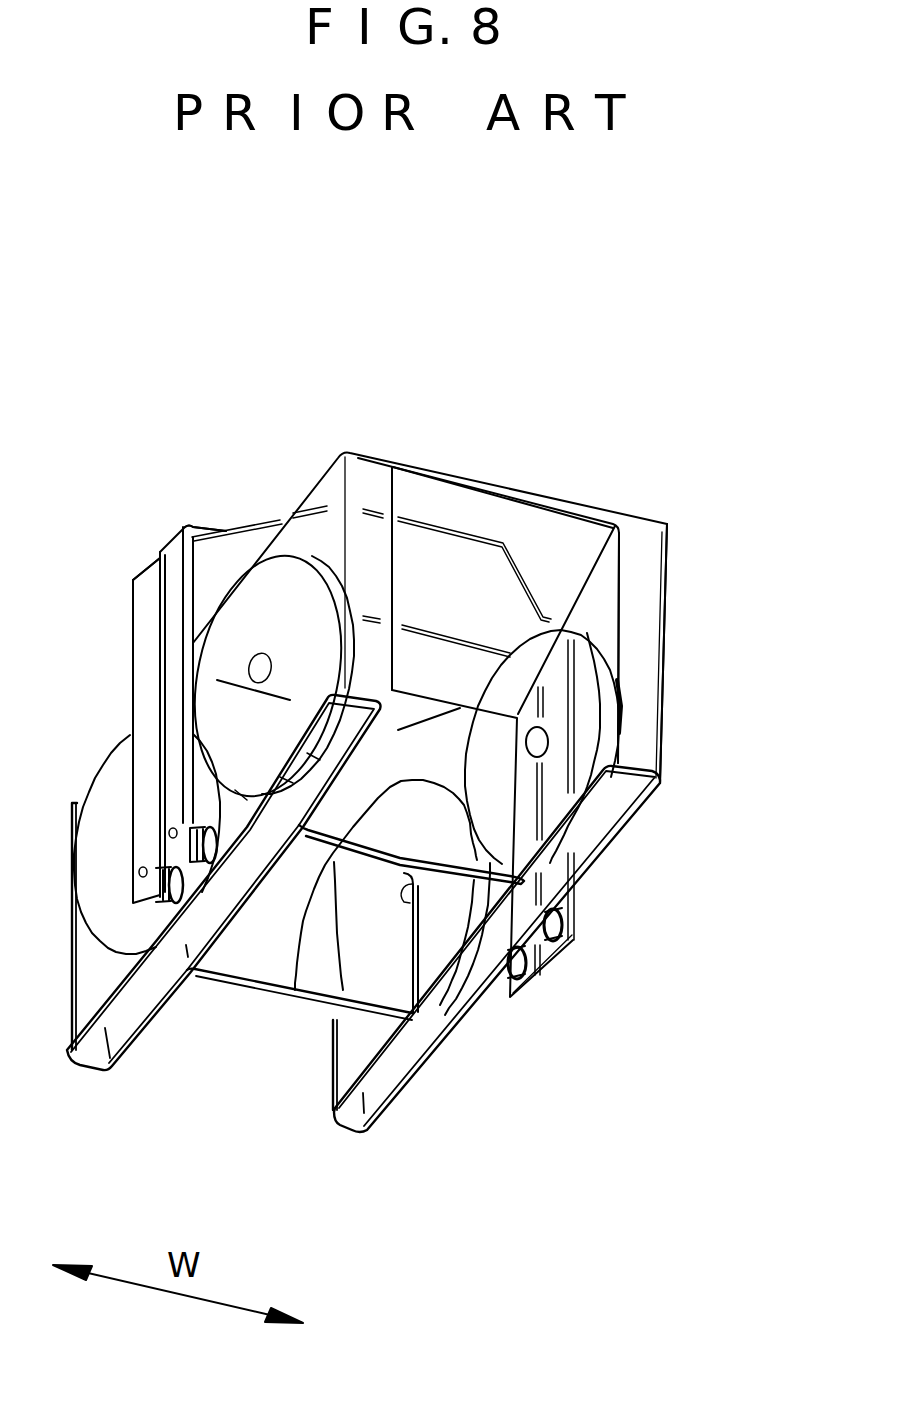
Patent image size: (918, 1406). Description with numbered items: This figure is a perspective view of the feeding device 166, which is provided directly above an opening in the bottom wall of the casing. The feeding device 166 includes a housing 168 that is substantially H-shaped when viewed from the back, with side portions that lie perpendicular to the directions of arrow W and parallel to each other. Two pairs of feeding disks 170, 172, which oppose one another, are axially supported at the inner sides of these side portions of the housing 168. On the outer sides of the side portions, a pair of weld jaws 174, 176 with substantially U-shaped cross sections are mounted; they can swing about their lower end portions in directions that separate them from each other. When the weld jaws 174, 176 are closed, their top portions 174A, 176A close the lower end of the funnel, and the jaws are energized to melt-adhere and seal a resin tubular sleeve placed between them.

The feeding device 166 is at (532, 467).
The housing 168 is at (638, 682).
The feeding disks 170 is at (583, 820).
The feeding disks 172 is at (452, 950).
The weld jaw 174 is at (134, 652).
The top portion of weld jaw 174A is at (203, 600).
The weld jaw 176 is at (165, 530).
The top portion of weld jaw 176A is at (246, 538).